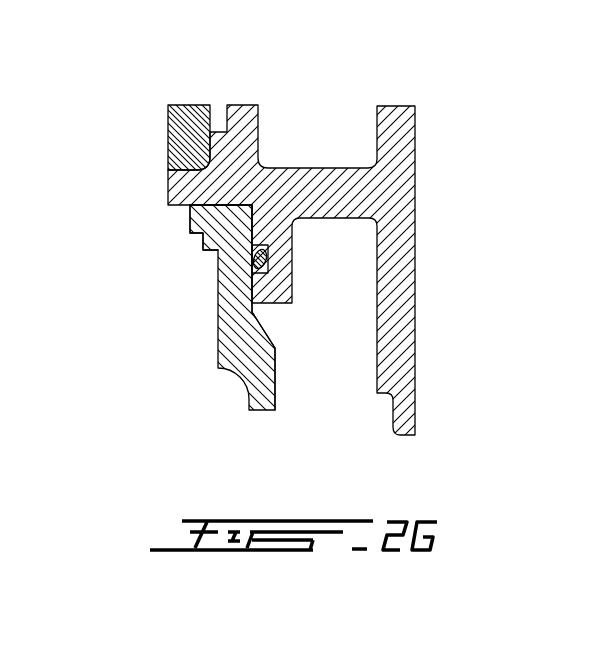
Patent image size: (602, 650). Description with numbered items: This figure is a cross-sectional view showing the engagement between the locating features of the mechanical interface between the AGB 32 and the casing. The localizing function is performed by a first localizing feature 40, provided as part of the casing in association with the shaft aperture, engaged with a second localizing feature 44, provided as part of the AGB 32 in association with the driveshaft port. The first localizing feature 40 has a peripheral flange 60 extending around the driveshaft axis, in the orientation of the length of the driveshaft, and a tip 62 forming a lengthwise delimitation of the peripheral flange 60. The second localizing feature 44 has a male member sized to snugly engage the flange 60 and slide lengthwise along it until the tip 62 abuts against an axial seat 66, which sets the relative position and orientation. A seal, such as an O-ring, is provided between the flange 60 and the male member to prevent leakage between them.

The AGB 32 is at (419, 178).
The first localizing feature 40 is at (233, 387).
The second localizing feature 44 is at (240, 285).
The peripheral flange 60 is at (262, 322).
The tip 62 is at (206, 218).
The axial seat 66 is at (233, 186).